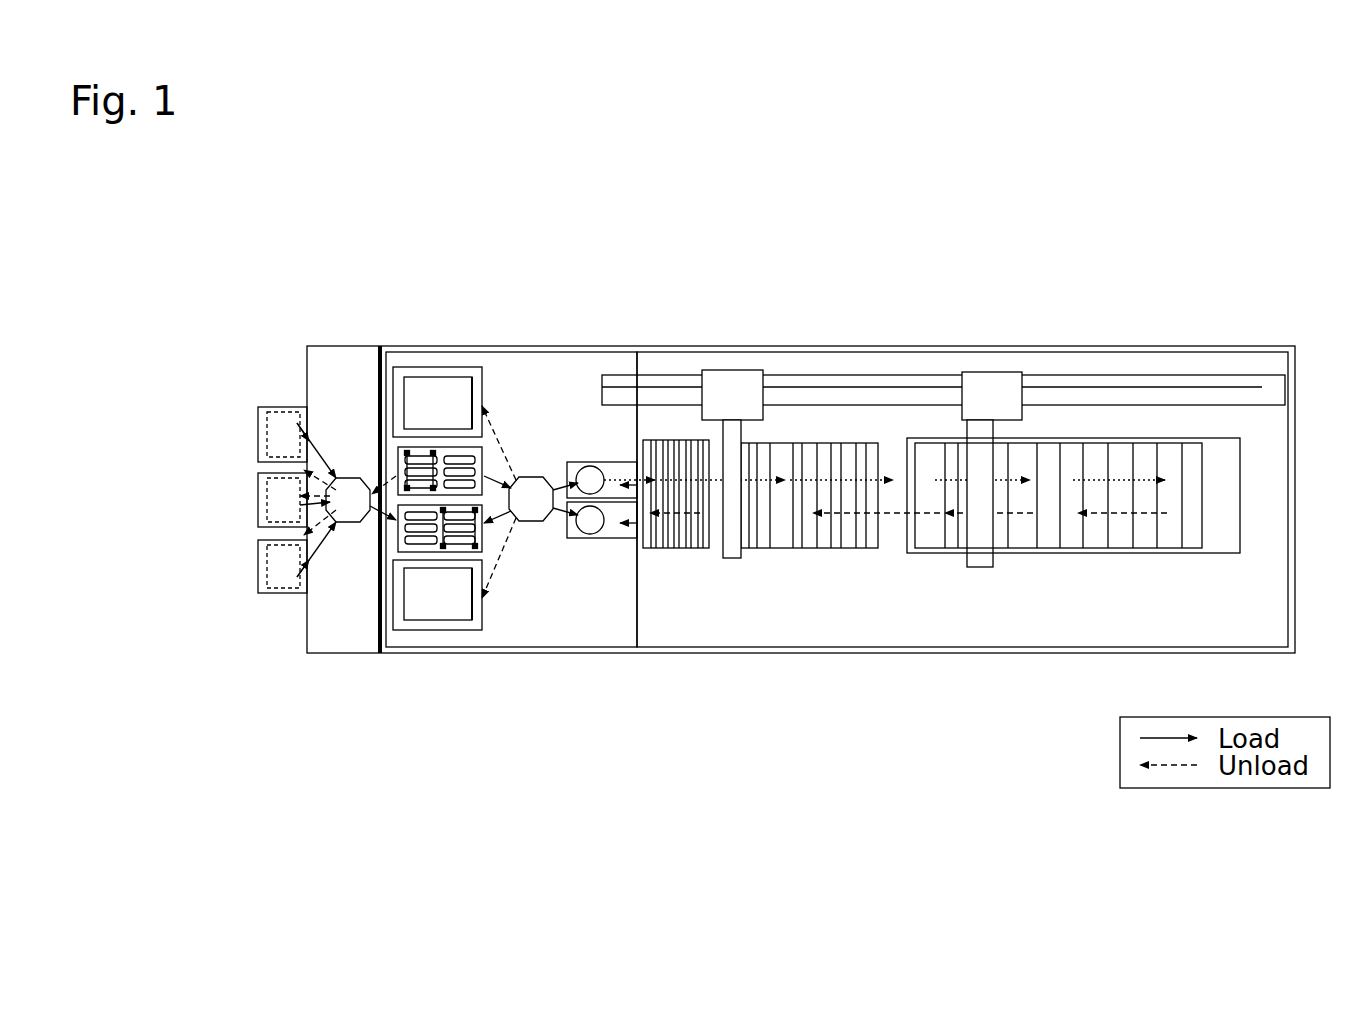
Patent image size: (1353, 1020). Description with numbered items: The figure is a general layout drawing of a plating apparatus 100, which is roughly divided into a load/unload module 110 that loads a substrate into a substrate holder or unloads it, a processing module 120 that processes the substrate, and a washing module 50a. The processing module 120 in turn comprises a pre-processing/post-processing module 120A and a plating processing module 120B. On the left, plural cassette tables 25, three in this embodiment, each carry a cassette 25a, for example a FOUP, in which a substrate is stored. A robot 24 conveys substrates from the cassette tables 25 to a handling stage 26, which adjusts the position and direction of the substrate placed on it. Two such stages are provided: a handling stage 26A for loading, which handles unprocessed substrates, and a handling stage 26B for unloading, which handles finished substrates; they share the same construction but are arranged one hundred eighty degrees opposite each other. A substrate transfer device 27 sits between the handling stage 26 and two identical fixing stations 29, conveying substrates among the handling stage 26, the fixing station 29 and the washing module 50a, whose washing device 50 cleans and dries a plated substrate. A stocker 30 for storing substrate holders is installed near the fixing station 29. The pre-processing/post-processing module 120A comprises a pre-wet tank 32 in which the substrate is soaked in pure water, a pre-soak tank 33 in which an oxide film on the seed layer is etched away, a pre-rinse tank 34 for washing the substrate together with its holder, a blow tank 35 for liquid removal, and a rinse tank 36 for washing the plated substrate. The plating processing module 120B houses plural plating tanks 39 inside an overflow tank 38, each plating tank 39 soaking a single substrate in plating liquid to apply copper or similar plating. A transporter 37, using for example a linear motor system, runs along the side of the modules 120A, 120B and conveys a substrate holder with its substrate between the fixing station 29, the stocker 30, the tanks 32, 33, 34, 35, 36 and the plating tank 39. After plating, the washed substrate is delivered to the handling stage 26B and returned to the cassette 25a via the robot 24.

The plating apparatus 100 is at (428, 202).
The load/unload module 110 is at (525, 347).
The processing module 120 is at (1077, 347).
The pre-processing/post-processing module 120A is at (870, 423).
The plating processing module 120B is at (1033, 592).
The robot 24 is at (355, 522).
The cassette table 25 is at (258, 457).
The cassette 25a is at (258, 433).
The handling stage 26 is at (413, 501).
The handling stage for loading 26A is at (418, 630).
The handling stage for unloading 26B is at (415, 367).
The washing device 50 is at (457, 367).
The washing module 50a is at (470, 367).
The substrate transfer device 27 is at (562, 527).
The fixing station 29 is at (605, 538).
The stocker 30 is at (692, 550).
The pre-wet tank 32 is at (750, 550).
The pre-soak tank 33 is at (785, 550).
The pre-rinse tank 34 is at (813, 550).
The blow tank 35 is at (838, 550).
The rinse tank 36 is at (863, 550).
The transporter 37 is at (1215, 387).
The overflow tank 38 is at (1167, 553).
The plating tank 39 is at (1113, 553).